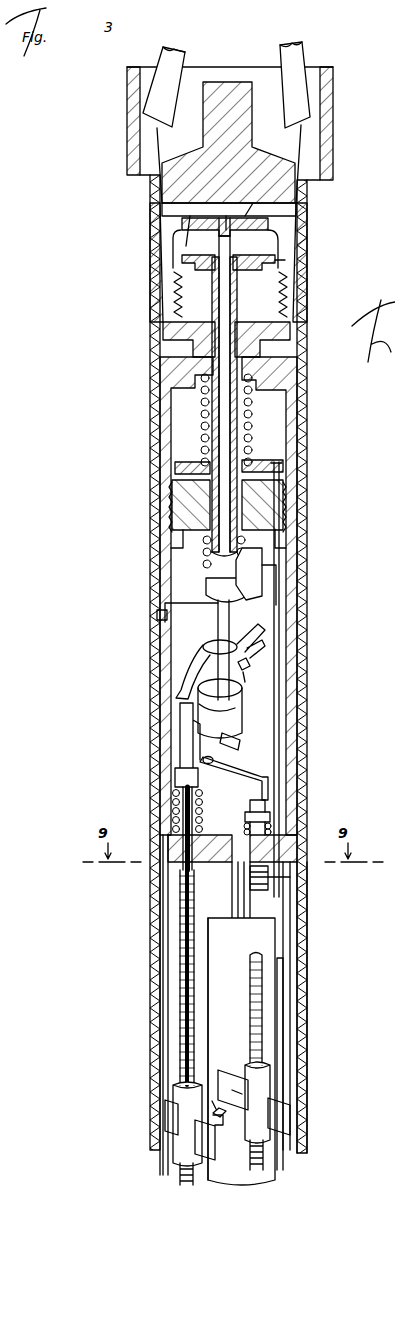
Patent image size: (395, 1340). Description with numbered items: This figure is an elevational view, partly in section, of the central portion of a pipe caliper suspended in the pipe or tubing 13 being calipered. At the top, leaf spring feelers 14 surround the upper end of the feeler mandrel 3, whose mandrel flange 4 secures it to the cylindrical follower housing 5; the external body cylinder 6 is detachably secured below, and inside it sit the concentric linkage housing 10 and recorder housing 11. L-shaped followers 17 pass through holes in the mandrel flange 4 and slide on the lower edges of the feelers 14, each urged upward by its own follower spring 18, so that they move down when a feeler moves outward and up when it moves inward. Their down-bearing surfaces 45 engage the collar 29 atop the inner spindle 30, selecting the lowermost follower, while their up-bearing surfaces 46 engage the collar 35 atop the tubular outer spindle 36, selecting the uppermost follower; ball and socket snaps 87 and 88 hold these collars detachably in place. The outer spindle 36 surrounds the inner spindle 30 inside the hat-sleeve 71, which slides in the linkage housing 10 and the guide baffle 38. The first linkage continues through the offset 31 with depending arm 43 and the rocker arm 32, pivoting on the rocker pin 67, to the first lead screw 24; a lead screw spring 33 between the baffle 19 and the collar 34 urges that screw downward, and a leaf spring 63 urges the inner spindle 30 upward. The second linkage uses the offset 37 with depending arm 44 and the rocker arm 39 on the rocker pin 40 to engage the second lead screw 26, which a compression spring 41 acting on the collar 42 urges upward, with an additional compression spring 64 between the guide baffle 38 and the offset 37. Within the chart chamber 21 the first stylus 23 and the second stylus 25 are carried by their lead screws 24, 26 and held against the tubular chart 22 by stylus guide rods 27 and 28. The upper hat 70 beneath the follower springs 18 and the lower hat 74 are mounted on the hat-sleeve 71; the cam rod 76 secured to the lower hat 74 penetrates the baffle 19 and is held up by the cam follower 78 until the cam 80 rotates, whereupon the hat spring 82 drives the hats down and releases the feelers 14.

The feeler mandrel 3 is at (246, 114).
The mandrel flange 4 is at (288, 189).
The follower housing 5 is at (293, 257).
The external body cylinder 6 is at (150, 411).
The linkage housing 10 is at (294, 546).
The recorder housing 11 is at (300, 934).
The pipe or tubing 13 is at (334, 122).
The leaf spring feelers 14 is at (302, 53).
The followers 17 is at (289, 232).
The follower spring 18 is at (288, 287).
The baffle 19 is at (212, 836).
The chart chamber 21 is at (290, 900).
The tubular chart 22 is at (216, 920).
The first stylus 23 is at (230, 1070).
The first lead screw 24 is at (262, 988).
The second stylus 25 is at (230, 1126).
The second lead screw 26 is at (180, 942).
The stylus guide rod 27 is at (282, 1075).
The stylus guide rod 28 is at (168, 897).
The collar 29 is at (224, 214).
The inner spindle 30 is at (236, 316).
The offset 31 is at (240, 709).
The rocker arm 32 is at (240, 757).
The lead screw spring 33 is at (268, 825).
The collar 34 is at (270, 811).
The collar 35 is at (198, 288).
The outer spindle 36 is at (246, 290).
The offset 37 is at (258, 565).
The guide baffle 38 is at (184, 506).
The rocker arm 39 is at (206, 660).
The rocker pin 40 is at (248, 672).
The compression spring 41 is at (174, 802).
The collar 42 is at (178, 772).
The depending arm 43 is at (182, 718).
The depending arm 44 is at (308, 585).
The down-bearing surfaces 45 is at (190, 215).
The up-bearing surfaces 46 is at (284, 263).
The leaf spring 63 is at (172, 603).
The compression spring 64 is at (202, 550).
The rocker pin 67 is at (232, 744).
The upper hat 70 is at (170, 329).
The hat-sleeve 71 is at (201, 428).
The lower hat 74 is at (186, 463).
The cam rod 76 is at (278, 660).
The cam follower 78 is at (274, 878).
The cam 80 is at (254, 898).
The hat spring 82 is at (252, 424).
The ball and socket snap 87 is at (252, 203).
The ball and socket snap 88 is at (248, 259).